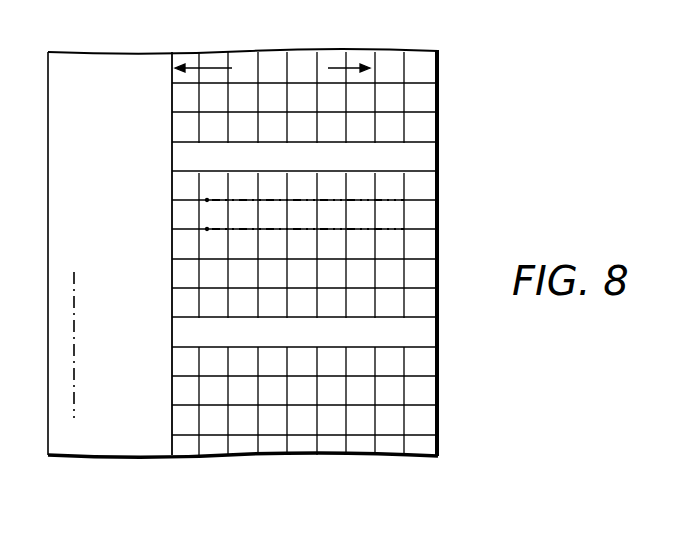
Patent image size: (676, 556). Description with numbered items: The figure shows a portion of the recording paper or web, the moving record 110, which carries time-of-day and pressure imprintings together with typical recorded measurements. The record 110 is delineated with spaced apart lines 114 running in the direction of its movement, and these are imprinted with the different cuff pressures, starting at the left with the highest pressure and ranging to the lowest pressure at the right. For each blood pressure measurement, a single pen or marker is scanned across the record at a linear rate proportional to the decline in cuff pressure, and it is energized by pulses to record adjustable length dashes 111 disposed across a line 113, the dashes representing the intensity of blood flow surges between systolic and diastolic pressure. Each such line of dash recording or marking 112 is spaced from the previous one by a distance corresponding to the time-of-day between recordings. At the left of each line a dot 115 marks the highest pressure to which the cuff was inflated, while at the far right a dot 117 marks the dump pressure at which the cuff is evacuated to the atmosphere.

The moving record 110 is at (276, 231).
The adjustable length dashes 111 is at (336, 200).
The line of dash recording or marking 112 is at (84, 74).
The line 113 is at (384, 435).
The spaced apart lines 114 is at (402, 78).
The dot 115 is at (404, 200).
The dot 117 is at (206, 199).